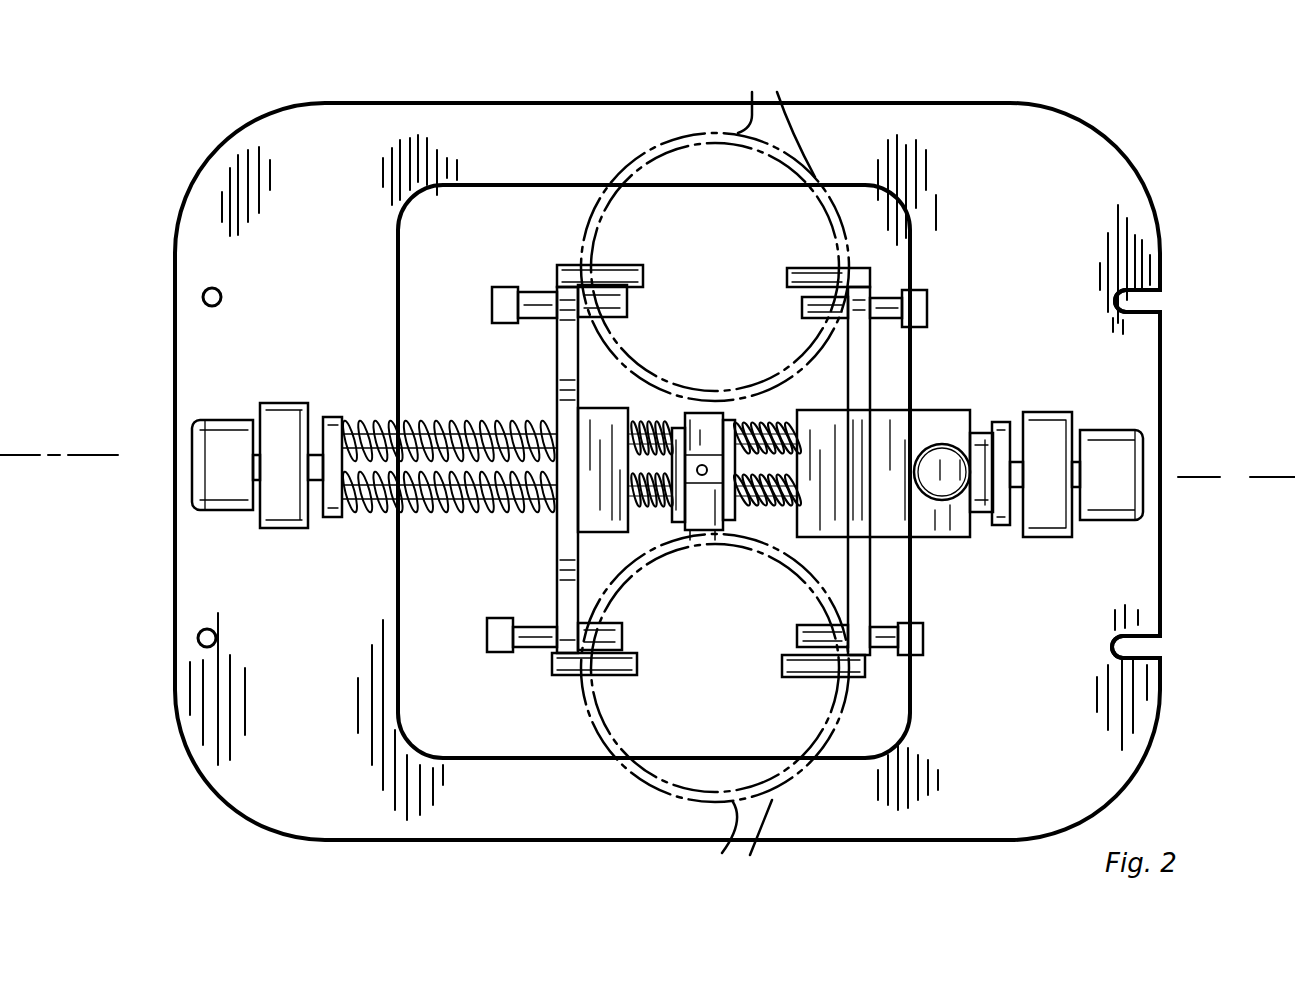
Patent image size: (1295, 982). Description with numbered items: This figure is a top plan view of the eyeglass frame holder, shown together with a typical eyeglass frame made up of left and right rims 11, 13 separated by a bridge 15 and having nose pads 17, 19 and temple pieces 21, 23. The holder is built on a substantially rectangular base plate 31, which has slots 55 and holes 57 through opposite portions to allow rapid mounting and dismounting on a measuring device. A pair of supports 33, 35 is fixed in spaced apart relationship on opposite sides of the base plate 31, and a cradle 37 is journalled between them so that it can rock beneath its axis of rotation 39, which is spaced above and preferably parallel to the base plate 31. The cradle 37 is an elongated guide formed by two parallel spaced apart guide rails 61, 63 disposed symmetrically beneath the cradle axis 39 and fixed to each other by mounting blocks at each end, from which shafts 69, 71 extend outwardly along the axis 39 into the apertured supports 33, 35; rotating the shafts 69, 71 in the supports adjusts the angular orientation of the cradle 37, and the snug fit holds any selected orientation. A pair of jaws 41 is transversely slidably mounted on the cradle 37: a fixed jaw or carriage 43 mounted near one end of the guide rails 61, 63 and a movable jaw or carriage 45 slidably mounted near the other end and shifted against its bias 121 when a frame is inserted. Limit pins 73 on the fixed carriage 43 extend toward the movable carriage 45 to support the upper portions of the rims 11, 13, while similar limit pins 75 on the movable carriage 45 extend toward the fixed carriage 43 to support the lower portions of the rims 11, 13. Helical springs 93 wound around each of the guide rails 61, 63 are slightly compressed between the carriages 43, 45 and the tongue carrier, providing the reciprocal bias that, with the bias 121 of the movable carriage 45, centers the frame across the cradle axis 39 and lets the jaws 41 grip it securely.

The left rim 11 is at (597, 250).
The right rim 13 is at (587, 725).
The bridge 15 is at (800, 473).
The nose pad 17 is at (655, 420).
The nose pad 19 is at (651, 530).
The temple piece 21 is at (778, 128).
The temple piece 23 is at (757, 808).
The base plate 31 is at (1102, 187).
The support 33 is at (283, 510).
The support 35 is at (1053, 513).
The cradle 37 is at (438, 525).
The axis of rotation 39 is at (95, 455).
The jaws 41 is at (680, 688).
The fixed jaw 43 is at (868, 603).
The movable jaw 45 is at (558, 622).
The slot 55 is at (1145, 312).
The hole 57 is at (222, 297).
The guide rail 61 is at (452, 420).
The guide rail 63 is at (543, 430).
The shaft 69 is at (320, 447).
The shaft 71 is at (1016, 475).
The limit pins 73 is at (818, 305).
The limit pins 75 is at (615, 316).
The helical springs 93 is at (777, 440).
The bias 121 is at (355, 422).